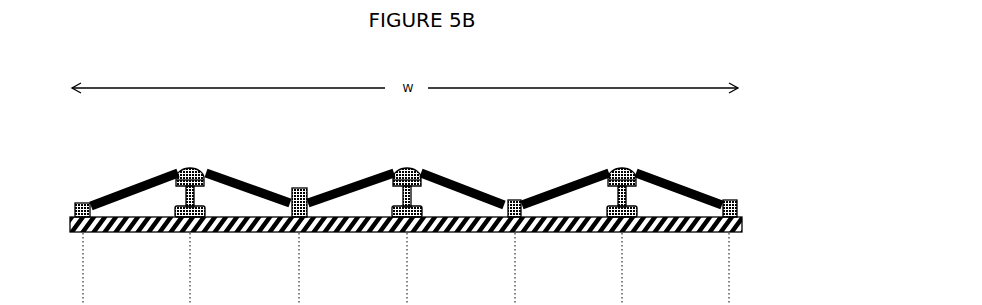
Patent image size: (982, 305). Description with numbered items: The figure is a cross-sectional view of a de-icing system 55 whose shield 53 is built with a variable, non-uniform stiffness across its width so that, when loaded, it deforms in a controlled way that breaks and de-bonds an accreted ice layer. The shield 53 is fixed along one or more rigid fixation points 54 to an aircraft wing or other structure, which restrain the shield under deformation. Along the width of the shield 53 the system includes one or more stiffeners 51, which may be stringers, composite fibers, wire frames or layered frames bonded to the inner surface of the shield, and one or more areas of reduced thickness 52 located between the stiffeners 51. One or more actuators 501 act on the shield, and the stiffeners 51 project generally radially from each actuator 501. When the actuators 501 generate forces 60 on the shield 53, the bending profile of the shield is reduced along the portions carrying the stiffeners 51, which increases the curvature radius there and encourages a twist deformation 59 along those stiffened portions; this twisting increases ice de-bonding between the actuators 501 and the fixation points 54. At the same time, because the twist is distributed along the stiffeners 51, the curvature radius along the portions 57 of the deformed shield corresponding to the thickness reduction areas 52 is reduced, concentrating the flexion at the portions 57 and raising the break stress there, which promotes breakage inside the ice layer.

The stiffener 51 is at (346, 204).
The area of reduced thickness 52 is at (408, 168).
The shield 53 is at (162, 178).
The fixation point 54 is at (517, 222).
The de-icing system 55 is at (745, 163).
The portion of the deformed shield 57 is at (178, 170).
The twist deformation 59 is at (290, 181).
The force 60 is at (624, 190).
The actuator 501 is at (620, 167).